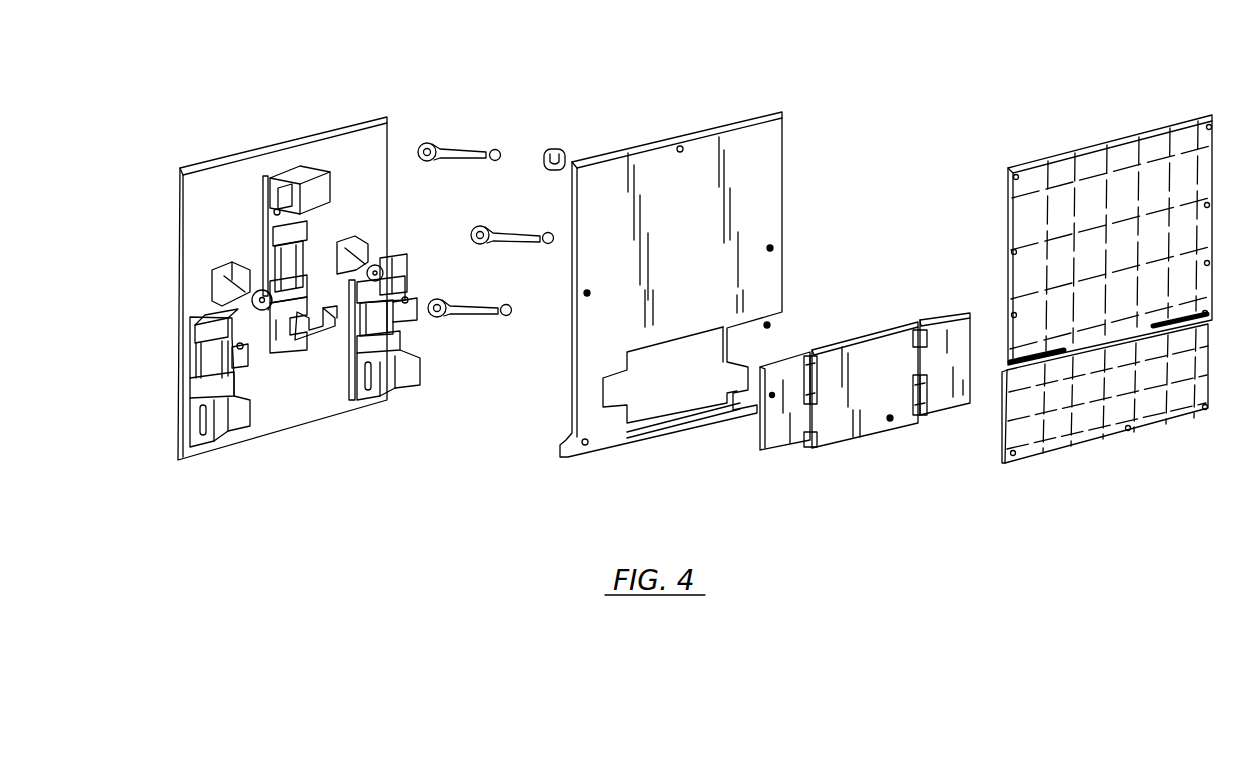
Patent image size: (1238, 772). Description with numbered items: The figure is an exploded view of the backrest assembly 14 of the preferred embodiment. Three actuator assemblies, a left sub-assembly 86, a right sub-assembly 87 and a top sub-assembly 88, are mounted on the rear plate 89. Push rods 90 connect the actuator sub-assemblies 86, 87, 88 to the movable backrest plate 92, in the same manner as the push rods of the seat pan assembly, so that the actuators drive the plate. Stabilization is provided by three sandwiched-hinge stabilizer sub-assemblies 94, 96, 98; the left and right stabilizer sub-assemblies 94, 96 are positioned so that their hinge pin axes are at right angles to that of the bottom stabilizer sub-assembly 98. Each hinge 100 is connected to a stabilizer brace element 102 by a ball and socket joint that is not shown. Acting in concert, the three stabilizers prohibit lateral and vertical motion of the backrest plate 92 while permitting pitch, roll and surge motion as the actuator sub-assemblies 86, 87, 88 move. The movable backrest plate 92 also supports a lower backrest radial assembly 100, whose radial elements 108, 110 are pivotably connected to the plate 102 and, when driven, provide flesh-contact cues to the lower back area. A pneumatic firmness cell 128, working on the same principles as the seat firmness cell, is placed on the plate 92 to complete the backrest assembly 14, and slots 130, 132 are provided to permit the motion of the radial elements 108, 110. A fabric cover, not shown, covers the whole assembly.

The backrest assembly 14 is at (308, 72).
The left actuator sub-assembly 86 is at (415, 333).
The right actuator sub-assembly 87 is at (210, 357).
The top actuator sub-assembly 88 is at (267, 202).
The rear plate 89 is at (260, 157).
The push rods 90 is at (473, 300).
The movable backrest plate 92 is at (775, 197).
The left stabilizer sub-assembly 94 is at (388, 262).
The right stabilizer sub-assembly 96 is at (223, 273).
The bottom stabilizer sub-assembly 98 is at (308, 348).
The hinge 100 is at (252, 300).
The stabilizer brace element 102 is at (268, 308).
The radial element 108 is at (943, 322).
The radial element 110 is at (777, 448).
The pneumatic firmness cell 128 is at (1107, 140).
The slot 130 is at (1180, 330).
The slot 132 is at (1028, 365).